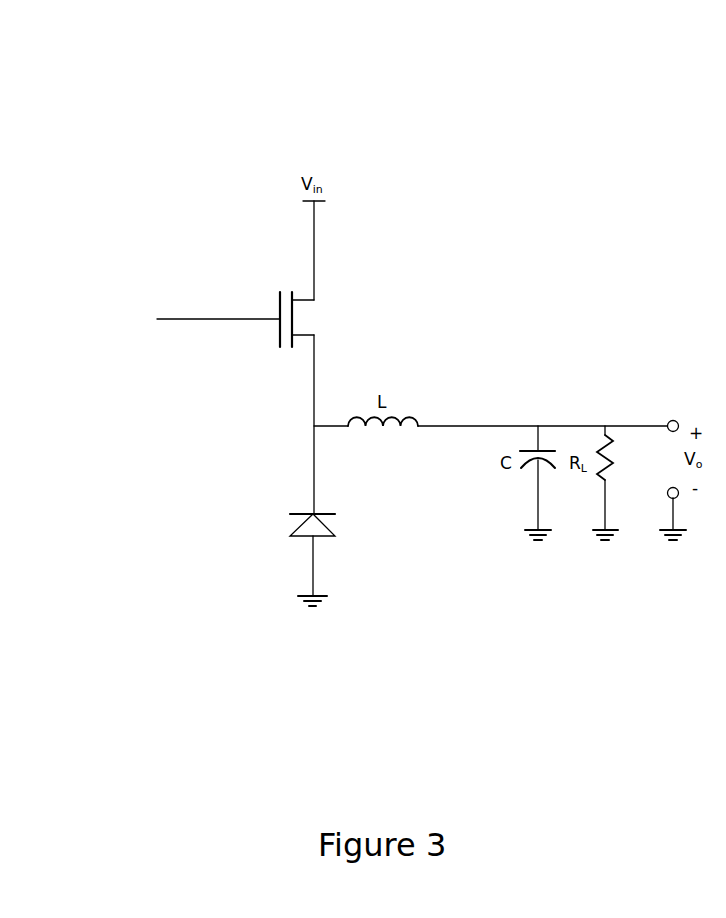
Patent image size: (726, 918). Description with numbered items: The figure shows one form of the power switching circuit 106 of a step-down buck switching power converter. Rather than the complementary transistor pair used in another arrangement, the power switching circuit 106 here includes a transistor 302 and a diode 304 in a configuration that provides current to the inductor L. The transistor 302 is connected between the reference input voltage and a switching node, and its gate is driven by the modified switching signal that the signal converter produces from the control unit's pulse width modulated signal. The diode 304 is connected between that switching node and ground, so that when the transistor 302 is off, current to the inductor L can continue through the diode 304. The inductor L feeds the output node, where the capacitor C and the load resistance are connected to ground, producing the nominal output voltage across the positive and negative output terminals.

The power switching circuit 106 is at (56, 55).
The transistor 302 is at (293, 325).
The diode 304 is at (322, 530).